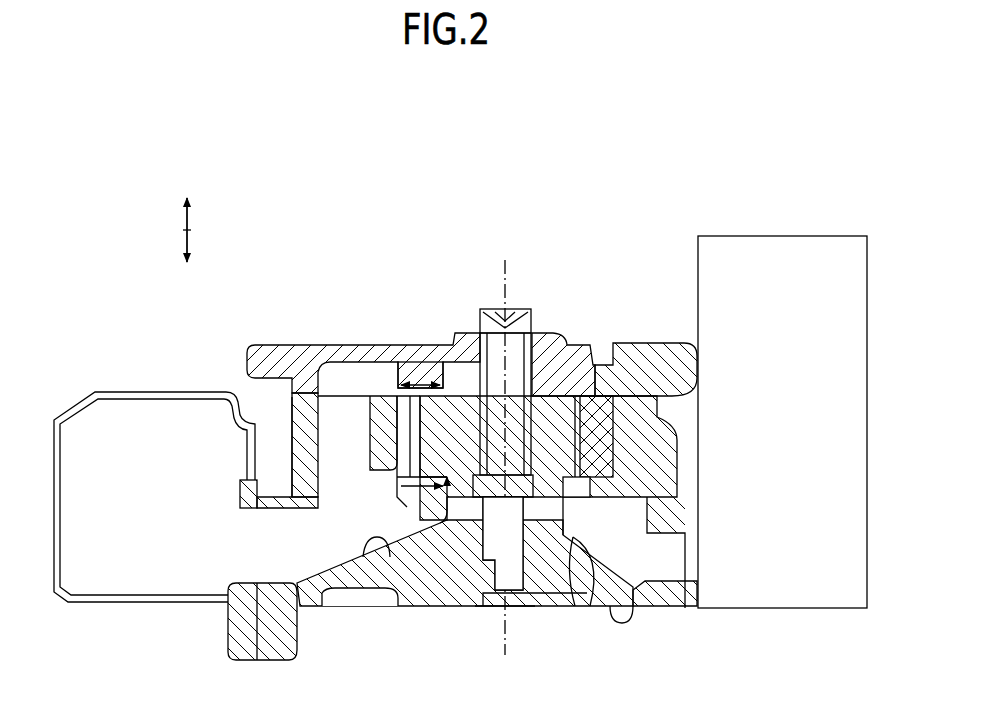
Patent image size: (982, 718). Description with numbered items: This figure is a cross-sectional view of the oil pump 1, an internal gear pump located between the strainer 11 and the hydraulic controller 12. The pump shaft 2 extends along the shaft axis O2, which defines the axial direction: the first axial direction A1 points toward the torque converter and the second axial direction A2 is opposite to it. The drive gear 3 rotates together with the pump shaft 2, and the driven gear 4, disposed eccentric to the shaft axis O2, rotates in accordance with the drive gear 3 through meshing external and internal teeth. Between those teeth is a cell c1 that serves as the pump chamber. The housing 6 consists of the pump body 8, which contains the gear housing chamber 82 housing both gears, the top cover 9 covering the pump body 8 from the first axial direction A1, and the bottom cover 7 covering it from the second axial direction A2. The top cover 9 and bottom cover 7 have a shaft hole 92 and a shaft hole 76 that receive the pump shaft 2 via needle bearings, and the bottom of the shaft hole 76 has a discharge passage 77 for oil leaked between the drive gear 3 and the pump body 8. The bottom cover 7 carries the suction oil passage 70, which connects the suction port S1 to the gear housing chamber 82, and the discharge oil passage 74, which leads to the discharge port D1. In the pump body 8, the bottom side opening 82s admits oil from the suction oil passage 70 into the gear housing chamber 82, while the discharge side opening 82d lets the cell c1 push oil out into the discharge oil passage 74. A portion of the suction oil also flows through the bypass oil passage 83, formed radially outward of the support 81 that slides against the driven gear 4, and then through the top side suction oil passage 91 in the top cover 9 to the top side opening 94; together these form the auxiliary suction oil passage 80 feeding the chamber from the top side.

The oil pump 1 is at (440, 274).
The pump shaft 2 is at (520, 322).
The drive gear 3 is at (549, 349).
The driven gear 4 is at (608, 350).
The housing 6 is at (256, 330).
The bottom cover 7 is at (443, 610).
The pump body 8 is at (287, 408).
The top cover 9 is at (322, 336).
The strainer 11 is at (148, 384).
The hydraulic controller 12 is at (814, 226).
The suction oil passage 70 is at (373, 608).
The discharge oil passage 74 is at (587, 608).
The shaft hole 76 is at (482, 608).
The discharge passage 77 is at (503, 565).
The auxiliary suction oil passage 80 is at (328, 364).
The support 81 is at (388, 394).
The gear housing chamber 82 is at (647, 343).
The discharge side opening 82d is at (595, 500).
The bottom side opening 82s is at (404, 498).
The bypass oil passage 83 is at (312, 392).
The top side suction oil passage 91 is at (409, 384).
The shaft hole 92 is at (496, 330).
The top side opening 94 is at (405, 380).
The cell c1 is at (551, 372).
The first axial direction A1 is at (187, 217).
The second axial direction A2 is at (187, 244).
The shaft axis O2 is at (502, 444).
The suction port S1 is at (300, 628).
The discharge port D1 is at (655, 608).